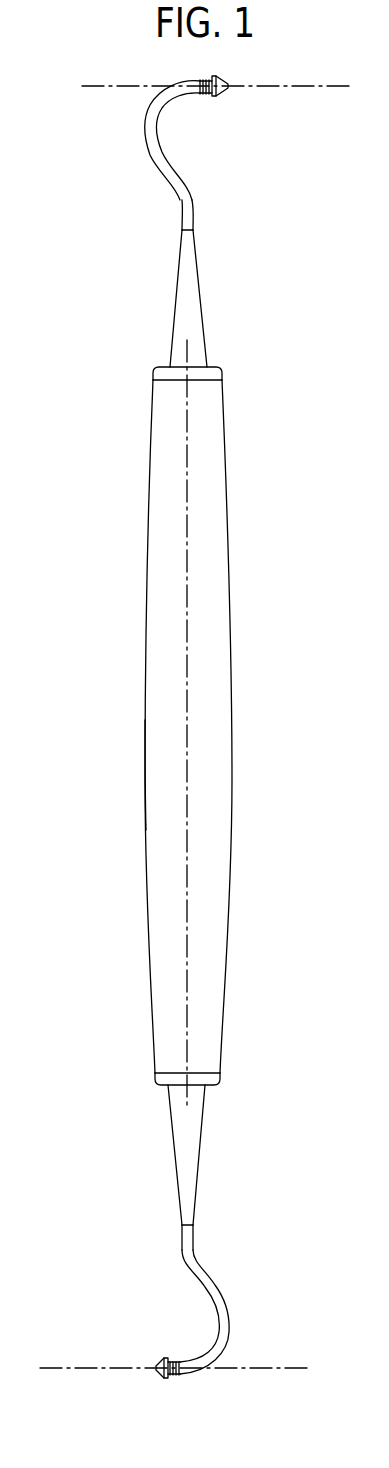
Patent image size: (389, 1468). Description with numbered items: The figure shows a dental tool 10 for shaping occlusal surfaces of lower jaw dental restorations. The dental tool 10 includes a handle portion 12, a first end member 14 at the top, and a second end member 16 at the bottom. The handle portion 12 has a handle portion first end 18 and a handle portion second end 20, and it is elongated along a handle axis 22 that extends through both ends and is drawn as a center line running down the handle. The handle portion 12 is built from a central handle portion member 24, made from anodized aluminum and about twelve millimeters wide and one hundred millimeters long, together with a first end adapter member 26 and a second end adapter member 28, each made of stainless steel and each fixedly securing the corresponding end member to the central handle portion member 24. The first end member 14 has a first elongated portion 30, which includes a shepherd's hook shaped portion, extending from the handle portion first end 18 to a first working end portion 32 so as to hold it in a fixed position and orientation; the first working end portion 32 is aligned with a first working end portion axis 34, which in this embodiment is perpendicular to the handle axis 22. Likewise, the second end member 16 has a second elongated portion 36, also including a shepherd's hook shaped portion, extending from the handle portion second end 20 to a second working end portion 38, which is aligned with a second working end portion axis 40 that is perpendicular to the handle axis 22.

The dental tool 10 is at (184, 727).
The handle portion 12 is at (117, 723).
The first end member 14 is at (192, 166).
The second end member 16 is at (200, 1274).
The handle portion first end 18 is at (218, 234).
The handle portion second end 20 is at (152, 1213).
The handle axis 22 is at (187, 950).
The central handle portion member 24 is at (145, 803).
The first end adapter member 26 is at (174, 322).
The second end adapter member 28 is at (173, 1150).
The first elongated portion 30 is at (161, 155).
The first working end portion 32 is at (233, 101).
The first working end portion axis 34 is at (112, 86).
The second elongated portion 36 is at (207, 1280).
The second working end portion 38 is at (138, 1338).
The second working end portion axis 40 is at (280, 1367).